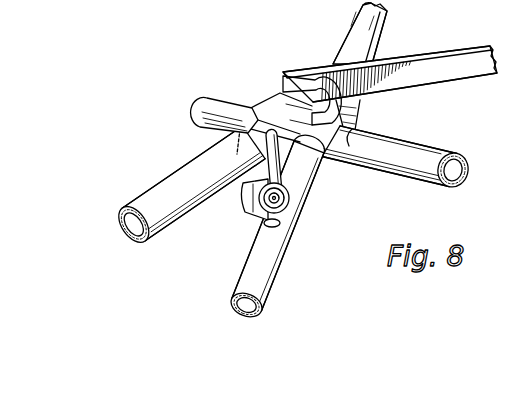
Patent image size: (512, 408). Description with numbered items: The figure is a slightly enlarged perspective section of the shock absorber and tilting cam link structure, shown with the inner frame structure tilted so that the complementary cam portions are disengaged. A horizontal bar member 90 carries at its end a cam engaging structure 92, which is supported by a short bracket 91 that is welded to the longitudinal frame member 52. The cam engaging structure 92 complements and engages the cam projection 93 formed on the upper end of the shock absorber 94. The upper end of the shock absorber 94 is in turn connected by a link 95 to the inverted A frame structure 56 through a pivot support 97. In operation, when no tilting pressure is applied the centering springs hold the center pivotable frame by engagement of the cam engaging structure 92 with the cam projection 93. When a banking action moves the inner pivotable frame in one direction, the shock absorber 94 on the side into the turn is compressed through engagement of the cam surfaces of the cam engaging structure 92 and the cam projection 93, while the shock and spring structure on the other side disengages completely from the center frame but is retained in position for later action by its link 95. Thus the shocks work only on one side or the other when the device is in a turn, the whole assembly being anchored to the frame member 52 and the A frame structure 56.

The longitudinal frame member 52 is at (413, 158).
The inverted A frame structure 56 is at (262, 284).
The horizontal bar member 90 is at (452, 67).
The short bracket 91 is at (358, 115).
The cam engaging structure 92 is at (285, 108).
The cam projection 93 is at (253, 110).
The shock absorber 94 is at (164, 205).
The link 95 is at (288, 178).
The pivot support 97 is at (240, 204).